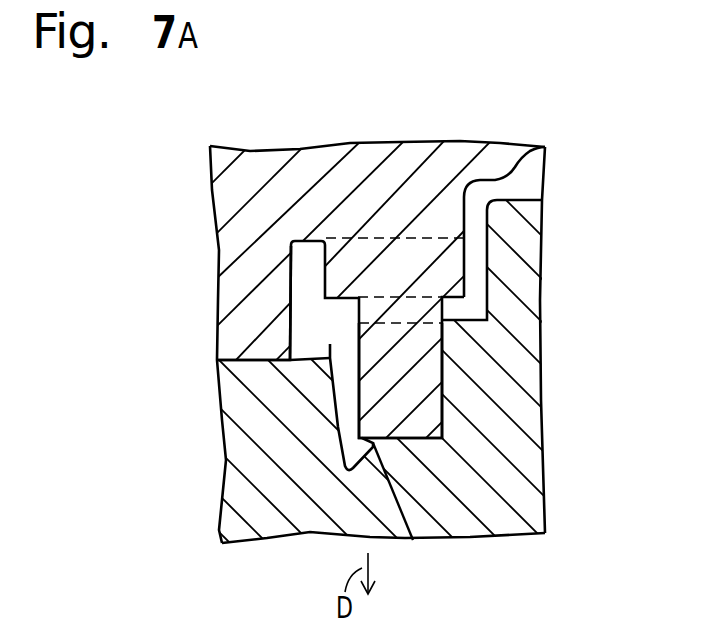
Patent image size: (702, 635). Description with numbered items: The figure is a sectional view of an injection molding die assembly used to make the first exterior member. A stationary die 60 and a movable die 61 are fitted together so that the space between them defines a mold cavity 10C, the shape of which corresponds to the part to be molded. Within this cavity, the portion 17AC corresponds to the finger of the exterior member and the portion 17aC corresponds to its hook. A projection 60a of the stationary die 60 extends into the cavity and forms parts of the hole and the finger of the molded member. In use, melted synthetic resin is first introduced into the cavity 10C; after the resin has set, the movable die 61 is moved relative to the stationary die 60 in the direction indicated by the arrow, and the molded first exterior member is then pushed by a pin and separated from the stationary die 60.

The stationary die 60 is at (418, 142).
The projection of the stationary die 60a is at (443, 391).
The movable die 61 is at (316, 537).
The mold cavity 10C is at (315, 320).
The finger portion of the mold cavity 17AC is at (349, 401).
The hook portion of the mold cavity 17aC is at (413, 540).